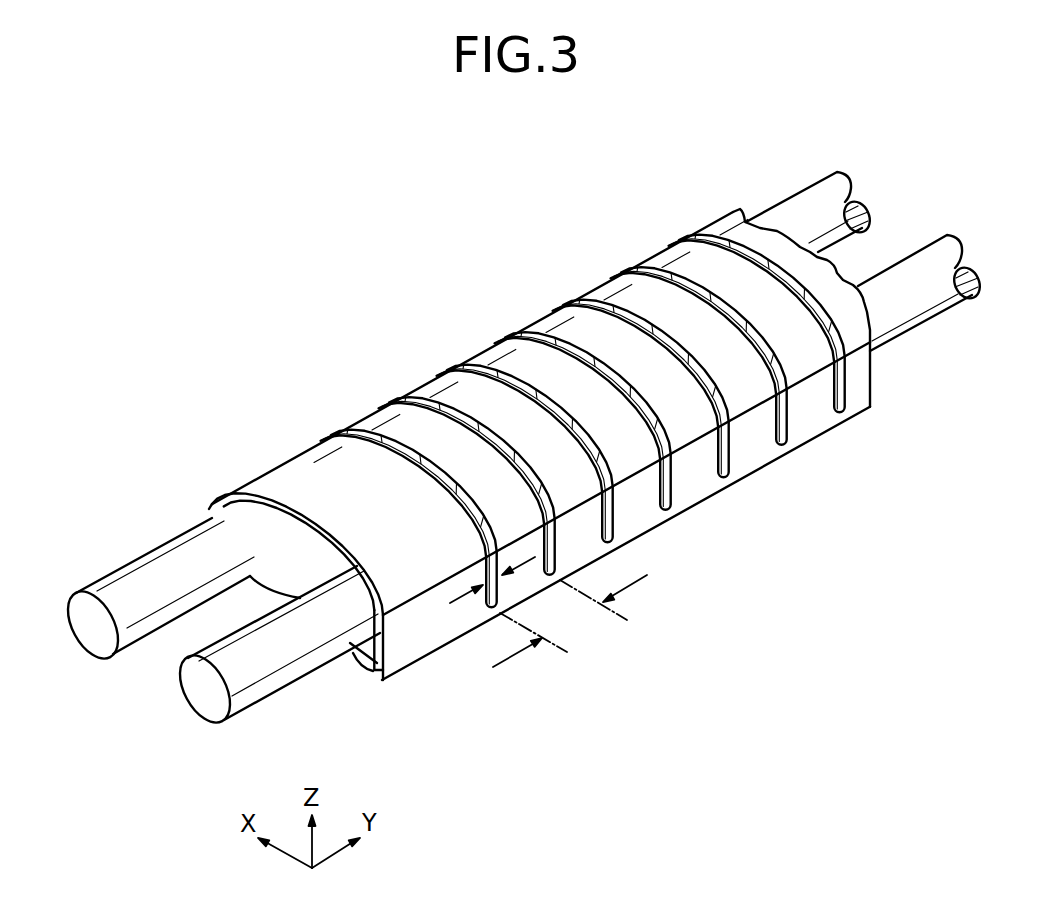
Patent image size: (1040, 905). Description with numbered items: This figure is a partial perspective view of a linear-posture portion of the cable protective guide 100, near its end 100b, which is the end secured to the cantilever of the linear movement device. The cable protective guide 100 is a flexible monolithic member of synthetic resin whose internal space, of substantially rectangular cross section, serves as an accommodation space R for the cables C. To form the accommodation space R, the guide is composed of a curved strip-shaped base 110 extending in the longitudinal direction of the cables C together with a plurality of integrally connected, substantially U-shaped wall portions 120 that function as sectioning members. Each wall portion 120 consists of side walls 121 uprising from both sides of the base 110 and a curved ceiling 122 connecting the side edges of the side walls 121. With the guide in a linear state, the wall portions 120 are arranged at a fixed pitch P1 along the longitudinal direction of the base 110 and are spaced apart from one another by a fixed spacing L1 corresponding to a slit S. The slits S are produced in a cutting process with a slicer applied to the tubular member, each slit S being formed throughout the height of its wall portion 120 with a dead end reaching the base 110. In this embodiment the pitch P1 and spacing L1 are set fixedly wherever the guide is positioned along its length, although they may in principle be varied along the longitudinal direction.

The cable protective guide 100 is at (325, 188).
The end of the cable protective guide 100b is at (226, 457).
The base 110 is at (353, 668).
The wall portion 120 is at (600, 427).
The side wall 121 is at (640, 483).
The curved ceiling 122 is at (597, 417).
The slit S is at (849, 415).
The cable C is at (95, 633).
The accommodation space R is at (310, 572).
The spacing L1 is at (477, 591).
The pitch P1 is at (570, 621).